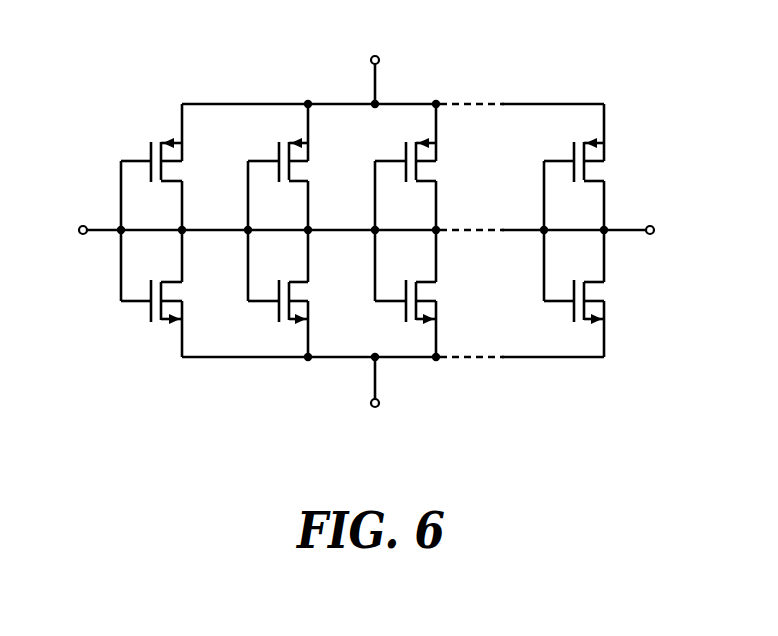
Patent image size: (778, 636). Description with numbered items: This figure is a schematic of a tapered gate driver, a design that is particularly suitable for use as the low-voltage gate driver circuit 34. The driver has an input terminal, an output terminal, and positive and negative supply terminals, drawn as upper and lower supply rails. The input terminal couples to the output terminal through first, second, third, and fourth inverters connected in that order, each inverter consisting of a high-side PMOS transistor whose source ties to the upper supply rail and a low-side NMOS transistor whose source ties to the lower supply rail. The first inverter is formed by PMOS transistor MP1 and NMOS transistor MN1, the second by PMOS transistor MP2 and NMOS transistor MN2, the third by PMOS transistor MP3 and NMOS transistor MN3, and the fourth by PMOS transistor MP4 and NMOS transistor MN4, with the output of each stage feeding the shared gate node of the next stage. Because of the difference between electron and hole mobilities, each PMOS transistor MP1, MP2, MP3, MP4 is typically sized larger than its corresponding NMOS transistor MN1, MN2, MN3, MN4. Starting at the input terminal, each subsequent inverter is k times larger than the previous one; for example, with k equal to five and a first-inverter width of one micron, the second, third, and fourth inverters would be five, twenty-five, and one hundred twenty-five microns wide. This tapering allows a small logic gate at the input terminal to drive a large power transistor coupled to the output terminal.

The low-voltage gate driver circuit 34 is at (86, 102).
The high-side PMOS transistor MP1 is at (175, 167).
The low-side NMOS transistor MN1 is at (176, 293).
The high-side PMOS transistor MP2 is at (302, 167).
The low-side NMOS transistor MN2 is at (303, 293).
The high-side PMOS transistor MP3 is at (429, 167).
The low-side NMOS transistor MN3 is at (430, 293).
The high-side PMOS transistor MP4 is at (598, 167).
The low-side NMOS transistor MN4 is at (599, 293).